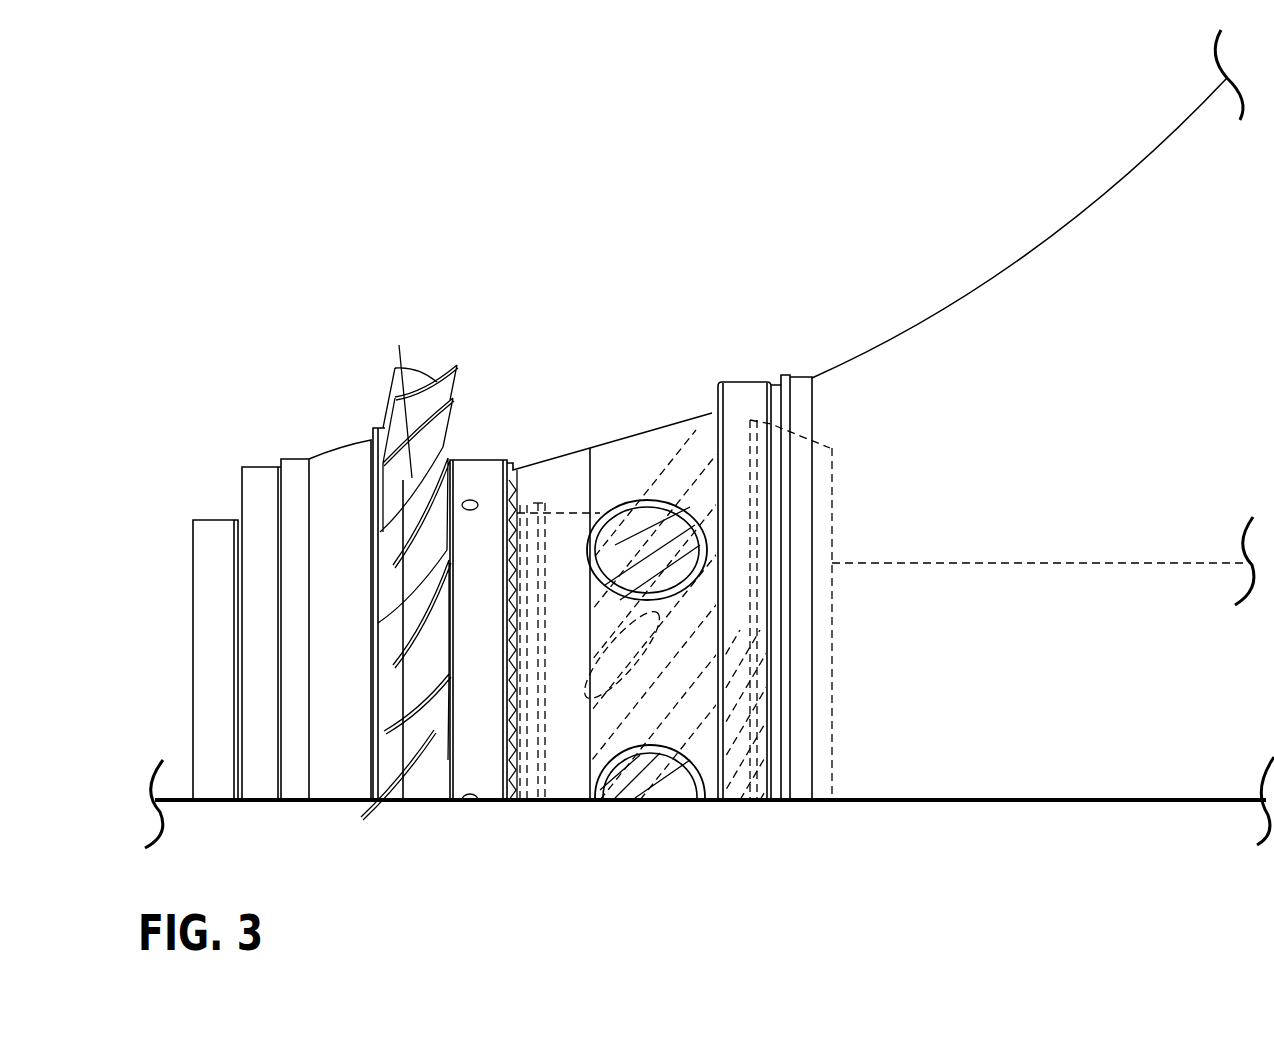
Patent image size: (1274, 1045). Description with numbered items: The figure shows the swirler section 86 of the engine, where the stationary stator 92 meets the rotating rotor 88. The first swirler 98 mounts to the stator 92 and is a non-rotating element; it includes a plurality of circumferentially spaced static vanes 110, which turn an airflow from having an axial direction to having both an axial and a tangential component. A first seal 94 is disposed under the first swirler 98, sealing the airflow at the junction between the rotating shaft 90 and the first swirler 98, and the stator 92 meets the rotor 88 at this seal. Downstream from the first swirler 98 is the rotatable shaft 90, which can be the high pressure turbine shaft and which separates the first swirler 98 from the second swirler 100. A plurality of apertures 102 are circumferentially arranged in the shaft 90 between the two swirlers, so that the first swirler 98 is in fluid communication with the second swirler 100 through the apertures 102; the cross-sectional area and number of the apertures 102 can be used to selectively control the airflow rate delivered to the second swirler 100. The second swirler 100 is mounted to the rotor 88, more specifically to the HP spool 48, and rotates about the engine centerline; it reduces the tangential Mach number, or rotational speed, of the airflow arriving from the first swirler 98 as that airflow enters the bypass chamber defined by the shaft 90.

The swirler section 86 is at (709, 470).
The rotor 88 is at (1162, 720).
The rotatable shaft 90 is at (1043, 240).
The stator 92 is at (343, 475).
The first seal 94 is at (269, 488).
The first swirler 98 is at (425, 808).
The second swirler 100 is at (835, 698).
The apertures 102 is at (663, 550).
The static vanes 110 is at (425, 423).
The HP spool 48 is at (985, 557).